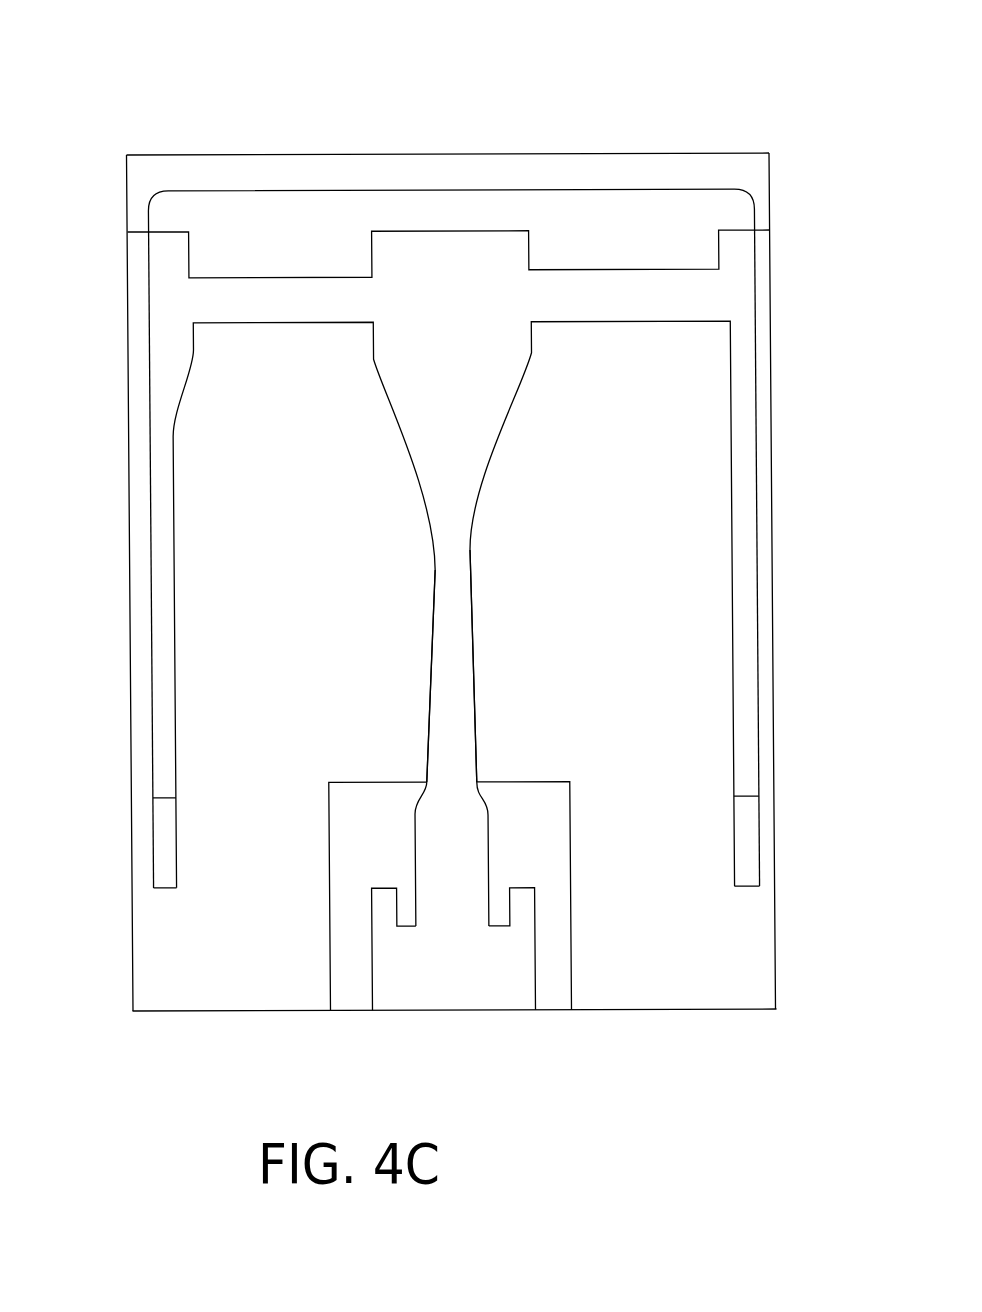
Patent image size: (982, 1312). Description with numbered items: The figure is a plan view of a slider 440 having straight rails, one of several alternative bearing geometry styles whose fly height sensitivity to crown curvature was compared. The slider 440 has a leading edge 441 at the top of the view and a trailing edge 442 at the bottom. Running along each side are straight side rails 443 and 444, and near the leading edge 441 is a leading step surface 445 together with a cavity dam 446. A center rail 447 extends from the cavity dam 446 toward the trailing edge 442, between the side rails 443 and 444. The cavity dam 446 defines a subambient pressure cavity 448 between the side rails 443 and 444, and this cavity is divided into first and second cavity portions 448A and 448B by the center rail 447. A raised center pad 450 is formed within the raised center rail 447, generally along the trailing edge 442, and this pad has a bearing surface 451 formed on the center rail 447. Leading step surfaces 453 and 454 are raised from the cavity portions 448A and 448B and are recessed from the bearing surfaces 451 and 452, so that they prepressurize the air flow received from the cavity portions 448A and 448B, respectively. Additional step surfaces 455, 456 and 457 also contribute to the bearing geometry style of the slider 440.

The slider 440 is at (195, 115).
The leading edge 441 is at (475, 152).
The trailing edge 442 is at (582, 1012).
The side rail 443 is at (160, 543).
The side rail 444 is at (742, 643).
The leading step surface 445 is at (259, 227).
The cavity dam 446 is at (576, 295).
The center rail 447 is at (445, 572).
The subambient pressure cavity 448 is at (352, 458).
The first cavity portion 448A is at (312, 519).
The second cavity portion 448B is at (627, 519).
The raised center pad 450 is at (573, 857).
The bearing surface 451 is at (449, 972).
The bearing surface 452 is at (458, 695).
The leading step surface 453 is at (365, 807).
The leading step surface 454 is at (528, 805).
The step surface 455 is at (686, 162).
The step surface 456 is at (162, 860).
The step surface 457 is at (743, 825).